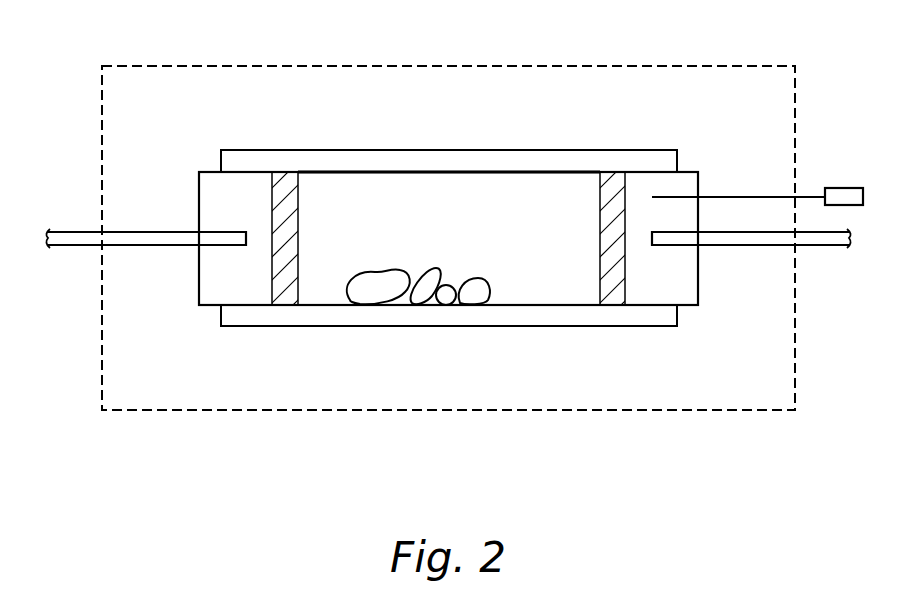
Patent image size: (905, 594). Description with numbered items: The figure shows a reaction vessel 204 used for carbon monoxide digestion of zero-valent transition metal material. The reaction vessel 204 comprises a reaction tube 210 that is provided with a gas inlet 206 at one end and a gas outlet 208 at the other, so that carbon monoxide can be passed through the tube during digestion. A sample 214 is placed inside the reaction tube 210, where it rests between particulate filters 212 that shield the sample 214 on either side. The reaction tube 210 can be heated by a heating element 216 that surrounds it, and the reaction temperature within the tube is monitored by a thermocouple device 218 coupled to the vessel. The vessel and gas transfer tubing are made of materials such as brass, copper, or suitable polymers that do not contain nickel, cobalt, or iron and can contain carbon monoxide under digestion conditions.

The reaction vessel 204 is at (572, 65).
The gas inlet 206 is at (72, 247).
The gas outlet 208 is at (820, 247).
The reaction tube 210 is at (200, 306).
The particulate filters 212 is at (612, 193).
The sample 214 is at (443, 263).
The heating element 216 is at (442, 150).
The thermocouple device 218 is at (840, 187).